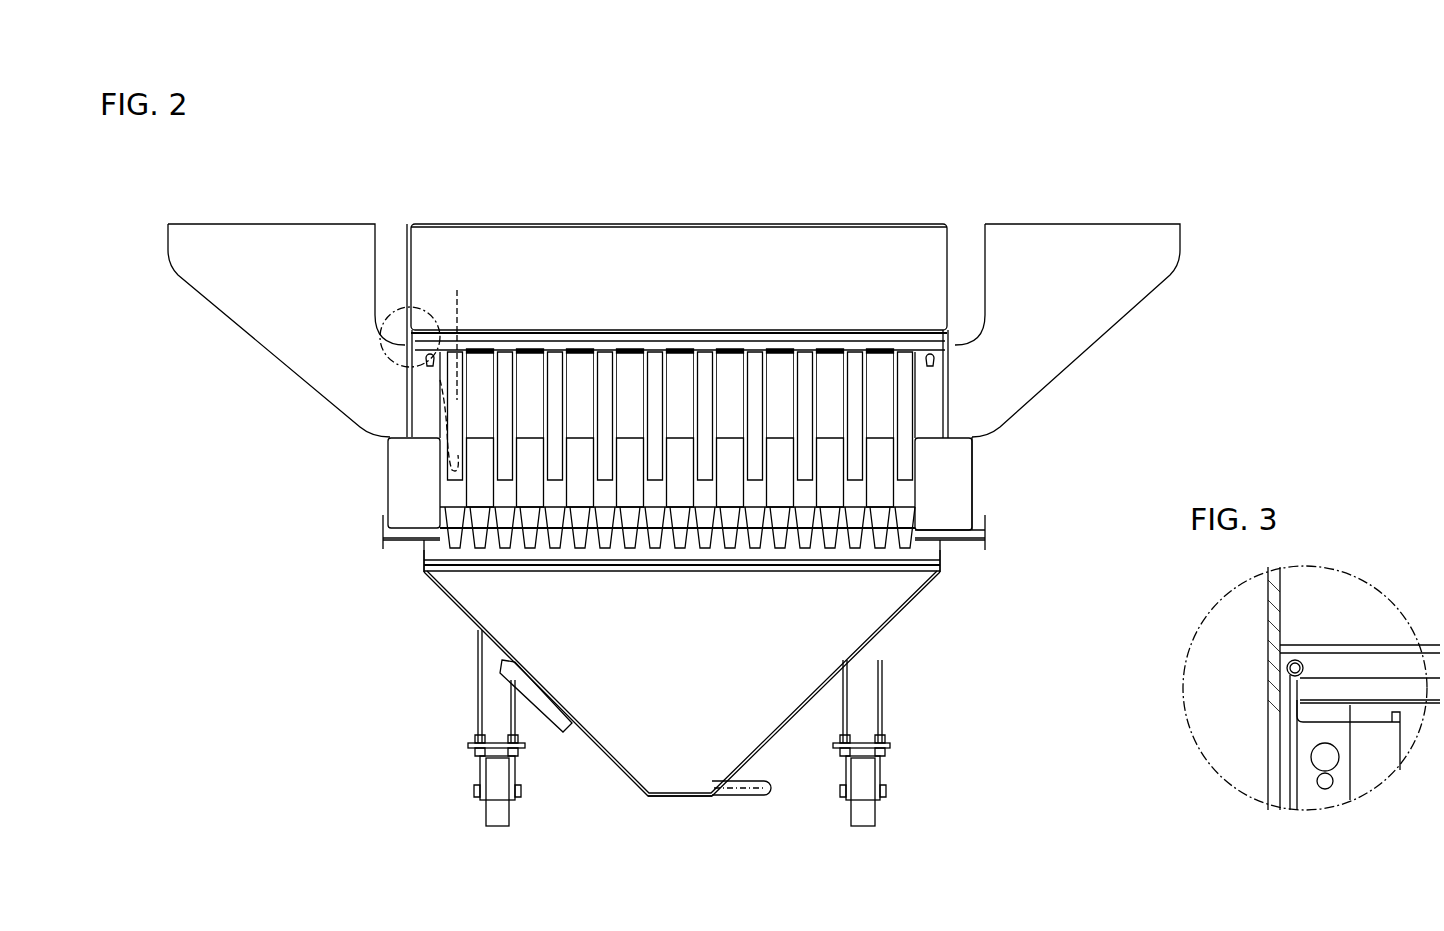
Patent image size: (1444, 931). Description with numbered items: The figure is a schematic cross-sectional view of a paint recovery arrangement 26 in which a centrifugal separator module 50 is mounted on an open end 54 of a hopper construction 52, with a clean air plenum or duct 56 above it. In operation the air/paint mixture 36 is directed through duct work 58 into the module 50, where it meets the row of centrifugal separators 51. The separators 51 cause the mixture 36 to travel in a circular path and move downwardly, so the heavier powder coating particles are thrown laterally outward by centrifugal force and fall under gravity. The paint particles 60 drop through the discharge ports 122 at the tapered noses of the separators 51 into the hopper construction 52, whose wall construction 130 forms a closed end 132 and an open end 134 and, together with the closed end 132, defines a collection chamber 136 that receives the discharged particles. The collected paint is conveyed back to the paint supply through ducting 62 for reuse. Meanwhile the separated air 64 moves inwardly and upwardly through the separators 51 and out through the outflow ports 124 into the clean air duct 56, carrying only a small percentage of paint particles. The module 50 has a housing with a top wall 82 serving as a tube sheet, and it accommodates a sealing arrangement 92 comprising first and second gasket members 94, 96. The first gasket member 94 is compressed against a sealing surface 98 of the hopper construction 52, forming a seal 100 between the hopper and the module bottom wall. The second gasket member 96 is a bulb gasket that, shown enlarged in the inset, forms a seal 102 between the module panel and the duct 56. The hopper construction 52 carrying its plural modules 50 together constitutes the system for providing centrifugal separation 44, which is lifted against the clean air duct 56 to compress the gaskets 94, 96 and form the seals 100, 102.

In FIG. 2, the paint recovery arrangement 26 is at (636, 165).
In FIG. 2, the air/paint mixture 36 is at (316, 325).
In FIG. 2, the duct work 58 is at (210, 305).
In FIG. 2, the sealing arrangement 92 is at (389, 300).
In FIG. 2, the air 64 is at (471, 272).
In FIG. 2, the outflow ports 124 is at (553, 345).
In FIG. 2, the centrifugal separators 51 is at (466, 375).
In FIG. 2, the clean air plenum or duct 56 is at (768, 228).
In FIG. 3, the clean air plenum or duct 56 is at (1282, 582).
In FIG. 2, the centrifugal separator module 50 is at (975, 372).
In FIG. 2, the top wall 82 is at (956, 443).
In FIG. 2, the system for providing centrifugal separation 44 is at (1015, 446).
In FIG. 2, the open end 134 is at (386, 512).
In FIG. 2, the sealing surface 98 is at (388, 538).
In FIG. 2, the first gasket member 94 is at (418, 536).
In FIG. 2, the paint particles 60 is at (445, 548).
In FIG. 2, the discharge port 122 is at (705, 548).
In FIG. 2, the open end 54 is at (925, 556).
In FIG. 2, the seal 100 is at (948, 535).
In FIG. 2, the wall construction 130 is at (912, 592).
In FIG. 2, the collection chamber 136 is at (786, 712).
In FIG. 2, the hopper construction 52 is at (575, 803).
In FIG. 2, the closed end 132 is at (648, 800).
In FIG. 2, the ducting 62 is at (735, 797).
In FIG. 3, the seal 102 is at (1289, 658).
In FIG. 3, the second gasket member 96 is at (1305, 668).